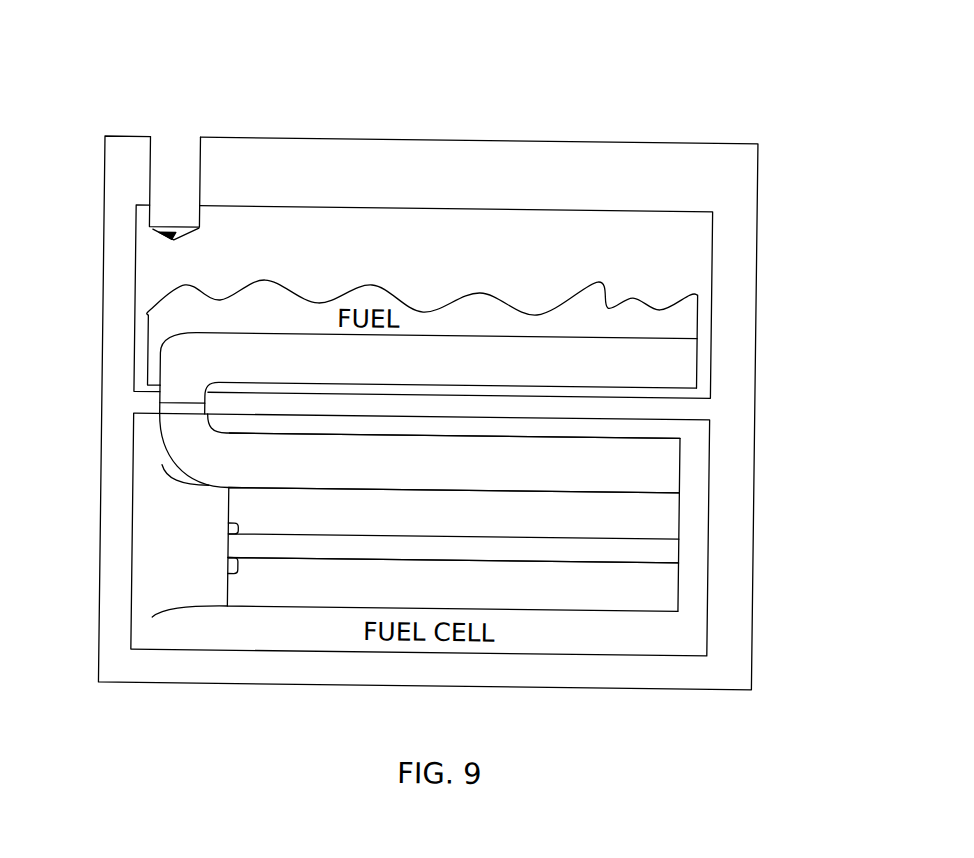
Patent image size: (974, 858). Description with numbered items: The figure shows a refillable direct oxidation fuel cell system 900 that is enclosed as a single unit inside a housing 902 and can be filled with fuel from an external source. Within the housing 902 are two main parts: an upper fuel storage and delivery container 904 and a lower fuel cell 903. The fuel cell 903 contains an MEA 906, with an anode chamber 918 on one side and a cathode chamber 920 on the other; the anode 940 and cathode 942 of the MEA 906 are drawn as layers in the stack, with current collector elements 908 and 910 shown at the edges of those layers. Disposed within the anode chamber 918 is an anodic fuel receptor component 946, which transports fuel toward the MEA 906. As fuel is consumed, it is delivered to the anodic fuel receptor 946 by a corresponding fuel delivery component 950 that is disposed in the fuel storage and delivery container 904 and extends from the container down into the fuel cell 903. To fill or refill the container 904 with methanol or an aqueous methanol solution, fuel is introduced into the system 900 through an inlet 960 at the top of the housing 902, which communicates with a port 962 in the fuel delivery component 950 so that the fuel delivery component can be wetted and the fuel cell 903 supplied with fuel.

The direct oxidation fuel cell system 900 is at (832, 71).
The housing 902 is at (622, 130).
The fuel cell 903 is at (702, 426).
The fuel storage and delivery container 904 is at (701, 251).
The MEA 906 is at (668, 546).
The anode current collector 908 is at (238, 523).
The cathode current collector 910 is at (238, 564).
The anode chamber 918 is at (101, 487).
The cathode chamber 920 is at (102, 560).
The anode 940 is at (453, 511).
The cathode 942 is at (452, 580).
The anodic fuel receptor component 946 is at (454, 459).
The fuel delivery component 950 is at (695, 360).
The fuel inlet 960 is at (175, 137).
The port 962 is at (166, 235).